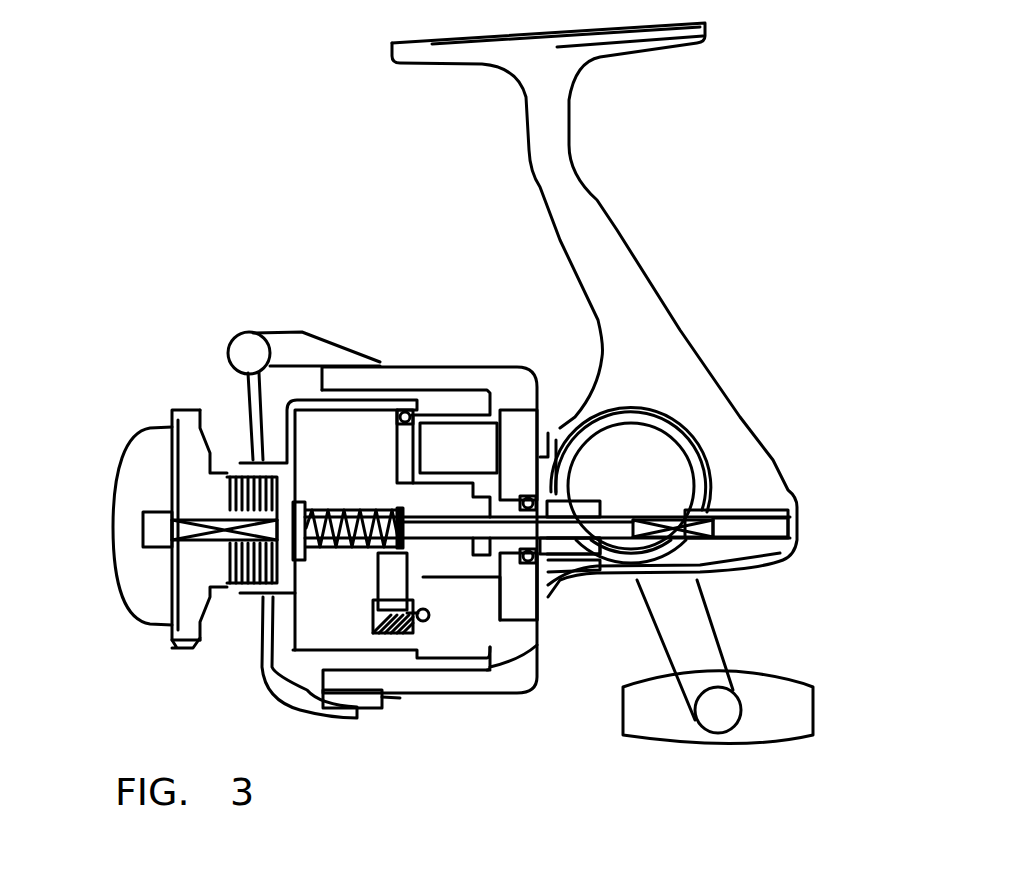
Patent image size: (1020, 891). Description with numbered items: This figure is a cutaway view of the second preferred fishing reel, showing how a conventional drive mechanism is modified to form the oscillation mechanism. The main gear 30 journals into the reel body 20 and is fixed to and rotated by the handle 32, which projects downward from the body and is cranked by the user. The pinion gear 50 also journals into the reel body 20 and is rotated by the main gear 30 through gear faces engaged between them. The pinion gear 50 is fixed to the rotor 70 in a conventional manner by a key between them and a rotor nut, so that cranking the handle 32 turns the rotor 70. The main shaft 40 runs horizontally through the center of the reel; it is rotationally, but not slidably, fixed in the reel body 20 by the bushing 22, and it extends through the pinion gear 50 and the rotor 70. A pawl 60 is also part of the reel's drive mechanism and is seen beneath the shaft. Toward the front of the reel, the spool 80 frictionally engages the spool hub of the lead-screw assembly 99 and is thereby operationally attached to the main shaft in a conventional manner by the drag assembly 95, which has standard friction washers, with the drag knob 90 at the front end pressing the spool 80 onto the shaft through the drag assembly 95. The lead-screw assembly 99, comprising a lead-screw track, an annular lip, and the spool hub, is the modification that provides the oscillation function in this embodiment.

The reel body 20 is at (677, 373).
The bushing 22 is at (753, 517).
The main gear 30 is at (690, 452).
The handle 32 is at (710, 660).
The main shaft 40 is at (560, 543).
The pinion gear 50 is at (580, 550).
The pawl 60 is at (387, 590).
The rotor 70 is at (447, 380).
The spool 80 is at (343, 410).
The drag knob 90 is at (127, 473).
The drag assembly 95 is at (247, 567).
The lead-screw assembly 99 is at (318, 510).